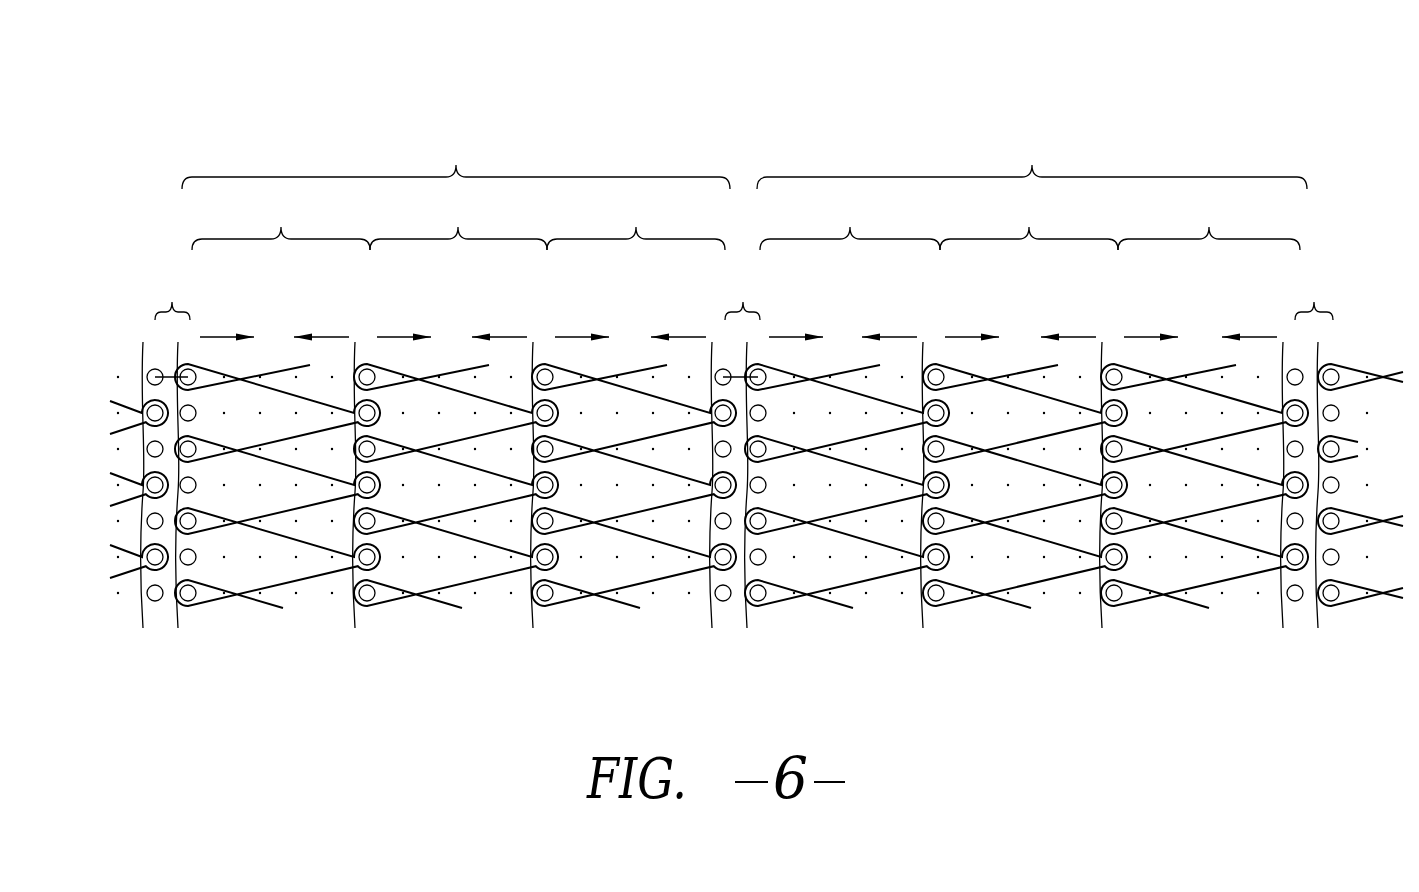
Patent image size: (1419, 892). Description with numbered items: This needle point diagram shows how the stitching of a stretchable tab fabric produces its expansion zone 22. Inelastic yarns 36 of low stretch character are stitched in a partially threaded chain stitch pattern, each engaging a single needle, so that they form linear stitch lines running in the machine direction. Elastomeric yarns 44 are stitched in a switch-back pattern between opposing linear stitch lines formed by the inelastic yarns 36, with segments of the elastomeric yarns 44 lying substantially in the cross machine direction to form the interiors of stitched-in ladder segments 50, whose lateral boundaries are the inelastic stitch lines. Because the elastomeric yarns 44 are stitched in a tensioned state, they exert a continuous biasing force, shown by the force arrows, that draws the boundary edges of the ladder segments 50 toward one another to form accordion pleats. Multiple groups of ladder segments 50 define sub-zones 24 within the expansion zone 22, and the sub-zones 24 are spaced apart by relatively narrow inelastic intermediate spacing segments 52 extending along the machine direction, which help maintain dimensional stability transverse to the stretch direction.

The expansion zone 22 is at (1250, 135).
The sub-zone 24 is at (744, 155).
The ladder segment 50 is at (746, 221).
The intermediate spacing segment 52 is at (744, 293).
The inelastic yarn 36 is at (1313, 663).
The elastomeric yarn 44 is at (1242, 593).